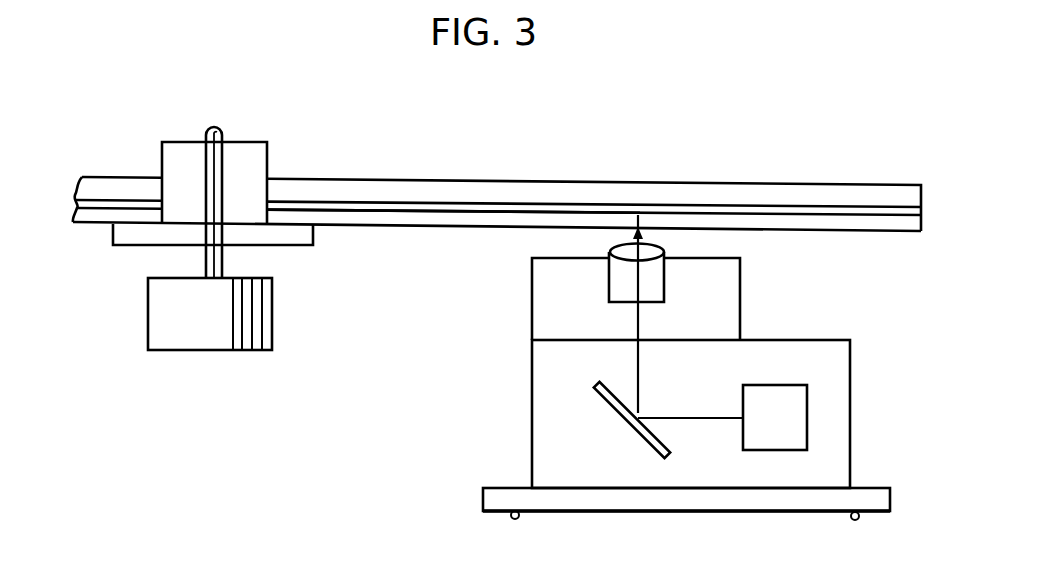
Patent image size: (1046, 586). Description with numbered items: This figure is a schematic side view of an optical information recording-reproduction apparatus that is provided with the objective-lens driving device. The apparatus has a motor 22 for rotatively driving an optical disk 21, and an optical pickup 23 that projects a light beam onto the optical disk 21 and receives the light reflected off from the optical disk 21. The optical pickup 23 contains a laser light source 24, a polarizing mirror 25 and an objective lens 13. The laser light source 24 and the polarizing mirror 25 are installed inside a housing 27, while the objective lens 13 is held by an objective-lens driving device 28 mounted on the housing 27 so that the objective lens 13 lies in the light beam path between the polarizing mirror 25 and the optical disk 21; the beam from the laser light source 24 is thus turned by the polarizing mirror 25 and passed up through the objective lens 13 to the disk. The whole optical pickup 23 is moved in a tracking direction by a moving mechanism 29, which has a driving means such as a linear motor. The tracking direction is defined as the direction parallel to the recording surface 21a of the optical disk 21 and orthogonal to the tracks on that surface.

The objective lens 13 is at (627, 250).
The optical disk 21 is at (392, 181).
The recording surface 21a is at (598, 212).
The motor 22 is at (270, 307).
The optical pickup 23 is at (672, 351).
The laser light source 24 is at (795, 423).
The polarizing mirror 25 is at (637, 432).
The housing 27 is at (851, 379).
The objective-lens driving device 28 is at (741, 297).
The moving mechanism 29 is at (483, 495).